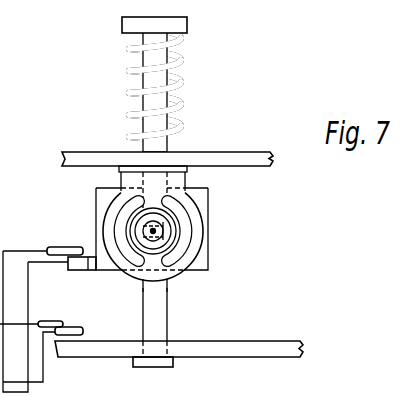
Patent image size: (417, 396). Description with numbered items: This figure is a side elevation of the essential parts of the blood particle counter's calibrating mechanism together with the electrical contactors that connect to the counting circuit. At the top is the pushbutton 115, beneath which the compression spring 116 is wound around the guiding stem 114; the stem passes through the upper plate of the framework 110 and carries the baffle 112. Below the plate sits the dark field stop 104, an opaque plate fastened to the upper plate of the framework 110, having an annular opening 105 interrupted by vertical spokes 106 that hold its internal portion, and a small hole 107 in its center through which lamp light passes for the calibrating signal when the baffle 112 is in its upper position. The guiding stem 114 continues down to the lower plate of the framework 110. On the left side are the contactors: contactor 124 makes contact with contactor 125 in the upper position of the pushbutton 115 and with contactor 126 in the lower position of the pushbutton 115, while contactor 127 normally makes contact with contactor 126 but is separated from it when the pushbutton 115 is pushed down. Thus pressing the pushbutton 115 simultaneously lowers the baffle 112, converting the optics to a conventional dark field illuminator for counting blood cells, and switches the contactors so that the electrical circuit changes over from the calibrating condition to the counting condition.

The dark field stop 104 is at (203, 199).
The annular opening 105 is at (175, 240).
The vertical spokes 106 is at (166, 283).
The small hole 107 is at (156, 231).
The framework 110 is at (231, 151).
The baffle 112 is at (208, 264).
The guiding stem 114 is at (168, 323).
The pushbutton 115 is at (188, 23).
The compression spring 116 is at (182, 78).
The contactor 124 is at (78, 270).
The contactor 125 is at (63, 246).
The contactor 126 is at (93, 331).
The contactor 127 is at (53, 320).